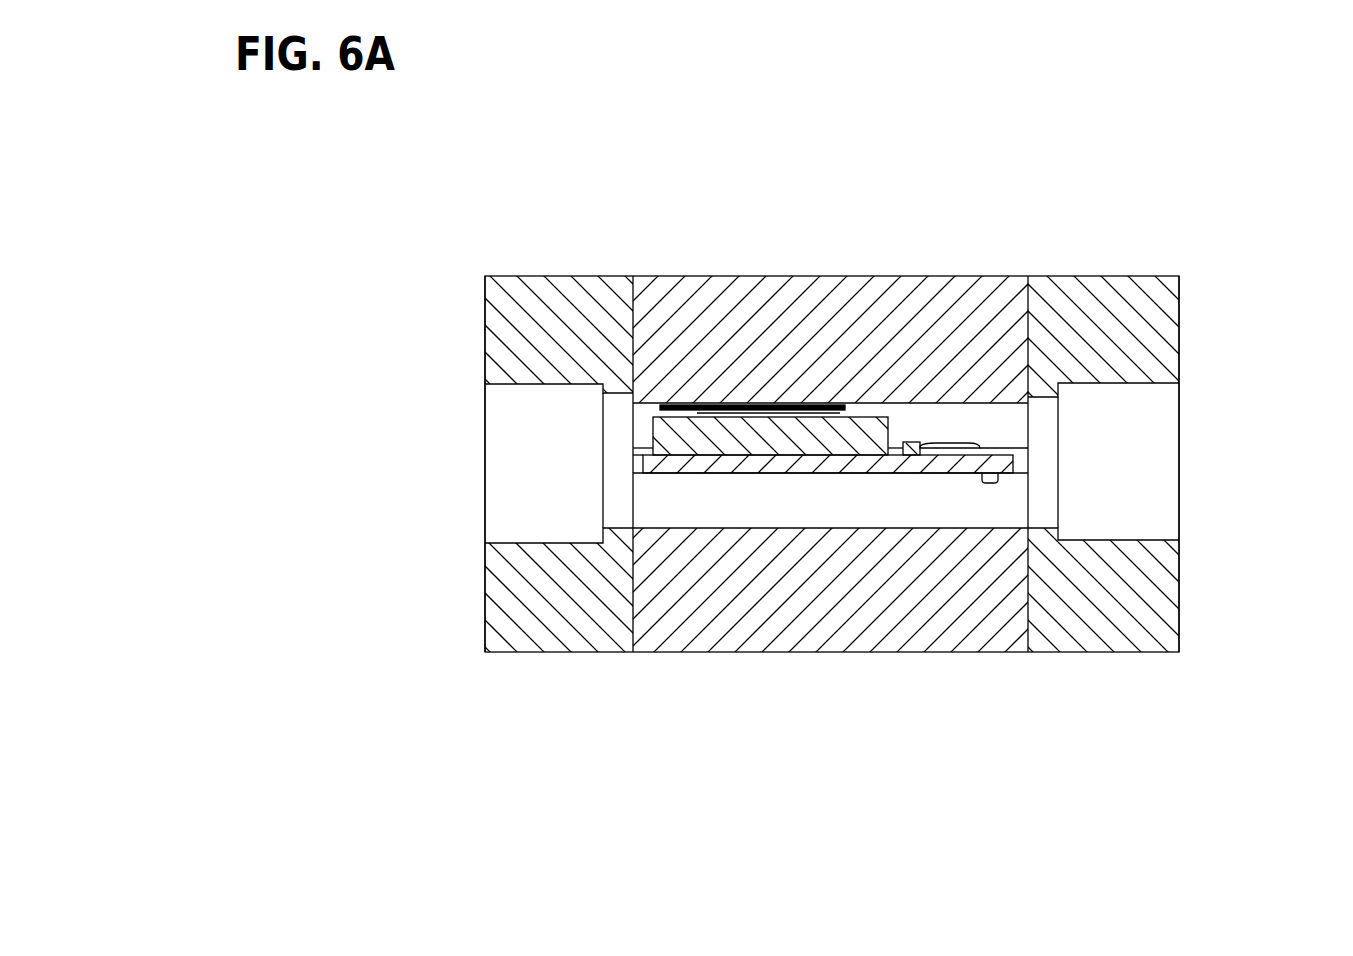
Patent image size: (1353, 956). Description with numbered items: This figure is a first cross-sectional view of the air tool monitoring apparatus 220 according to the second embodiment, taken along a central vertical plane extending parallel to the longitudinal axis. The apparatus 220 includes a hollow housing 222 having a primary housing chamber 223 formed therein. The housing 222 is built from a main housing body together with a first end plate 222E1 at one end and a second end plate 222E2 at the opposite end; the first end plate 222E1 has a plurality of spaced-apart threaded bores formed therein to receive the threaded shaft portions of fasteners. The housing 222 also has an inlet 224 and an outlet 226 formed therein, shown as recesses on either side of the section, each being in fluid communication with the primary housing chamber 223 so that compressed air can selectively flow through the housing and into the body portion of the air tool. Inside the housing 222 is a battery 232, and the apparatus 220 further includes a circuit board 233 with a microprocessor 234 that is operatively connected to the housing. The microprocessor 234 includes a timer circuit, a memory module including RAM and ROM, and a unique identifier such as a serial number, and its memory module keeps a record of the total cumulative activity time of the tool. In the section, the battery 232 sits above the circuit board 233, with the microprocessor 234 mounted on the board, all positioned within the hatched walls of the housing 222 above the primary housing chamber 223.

The air tool monitoring apparatus 220 is at (885, 230).
The hollow housing 222 is at (852, 656).
The first end plate 222E1 is at (1133, 652).
The second end plate 222E2 is at (500, 654).
The primary housing chamber 223 is at (830, 500).
The inlet 224 is at (1150, 533).
The outlet 226 is at (512, 543).
The battery 232 is at (869, 404).
The circuit board 233 is at (643, 457).
The microprocessor 234 is at (965, 443).